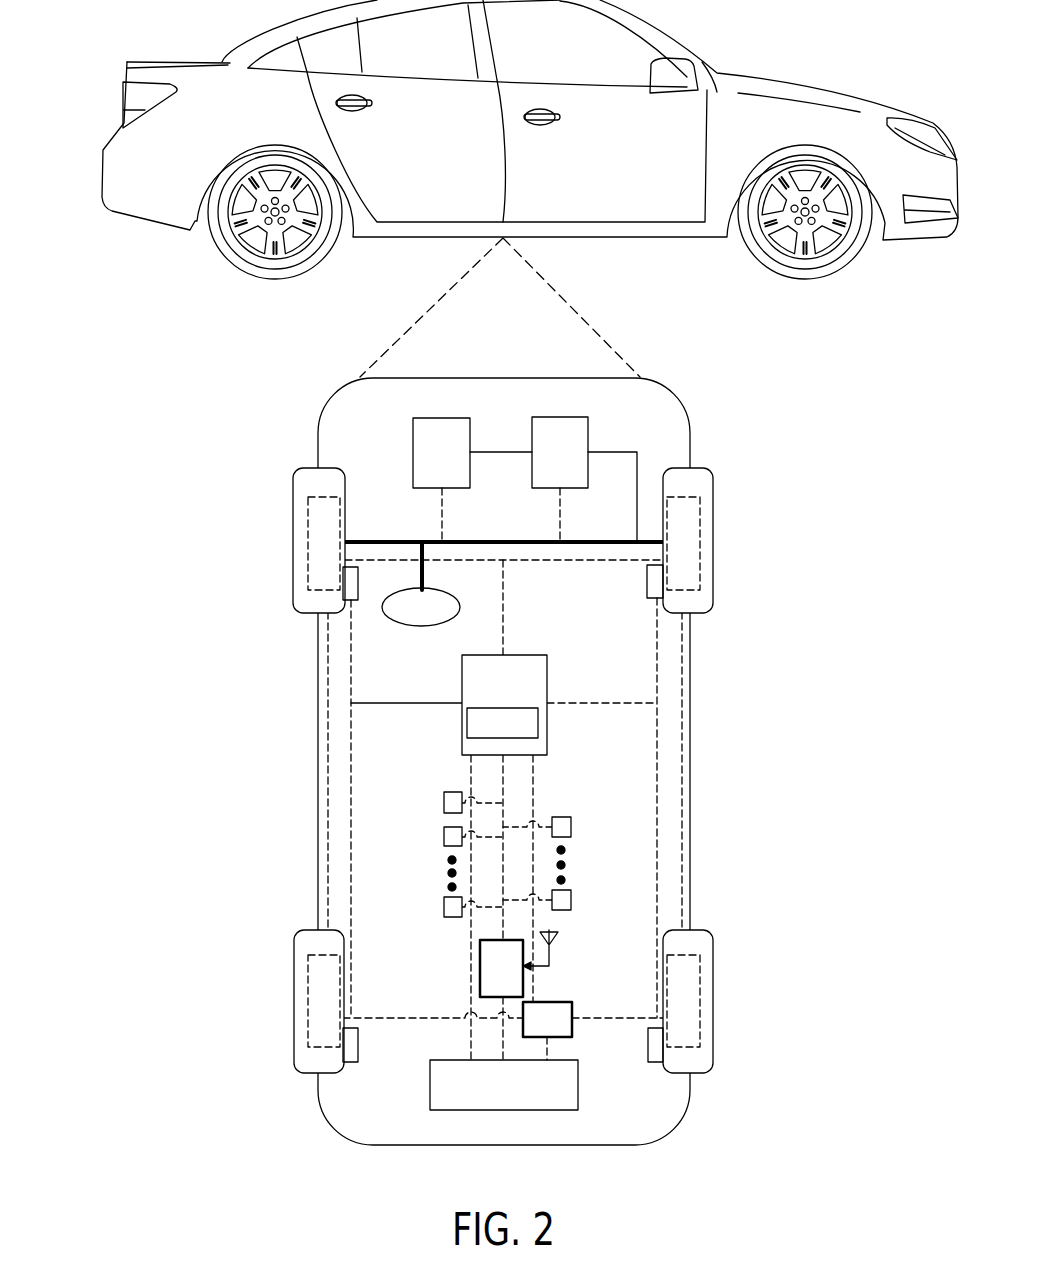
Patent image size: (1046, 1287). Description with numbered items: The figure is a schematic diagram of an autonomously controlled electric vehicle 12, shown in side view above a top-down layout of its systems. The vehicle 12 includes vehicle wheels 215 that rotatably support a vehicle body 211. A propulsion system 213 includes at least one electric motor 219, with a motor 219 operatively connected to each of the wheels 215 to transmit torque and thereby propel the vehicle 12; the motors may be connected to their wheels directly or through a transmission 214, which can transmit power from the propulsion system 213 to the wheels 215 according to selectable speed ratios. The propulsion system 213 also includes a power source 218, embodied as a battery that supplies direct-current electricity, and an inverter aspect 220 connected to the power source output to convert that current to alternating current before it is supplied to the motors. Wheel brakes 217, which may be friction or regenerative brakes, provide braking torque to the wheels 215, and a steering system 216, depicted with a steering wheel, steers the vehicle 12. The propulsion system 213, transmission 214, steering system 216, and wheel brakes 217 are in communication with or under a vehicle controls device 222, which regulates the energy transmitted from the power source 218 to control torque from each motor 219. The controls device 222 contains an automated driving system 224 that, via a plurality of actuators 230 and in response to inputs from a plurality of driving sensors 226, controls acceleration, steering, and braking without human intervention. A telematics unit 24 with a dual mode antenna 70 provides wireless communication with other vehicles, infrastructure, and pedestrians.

The vehicle 12 is at (103, 152).
The vehicle body 211 is at (690, 742).
The propulsion system 213 is at (413, 450).
The transmission 214 is at (588, 427).
The vehicle wheels 215 is at (345, 520).
The steering system 216 is at (428, 627).
The wheel brakes 217 is at (358, 587).
The power source 218 is at (430, 1090).
The electric motor 219 is at (308, 571).
The inverter aspect 220 is at (572, 1005).
The vehicle controls device 222 is at (547, 700).
The automated driving system 224 is at (538, 738).
The driving sensors 226 is at (444, 805).
The actuators 230 is at (571, 828).
The telematics unit 24 is at (480, 970).
The dual mode antenna 70 is at (552, 960).